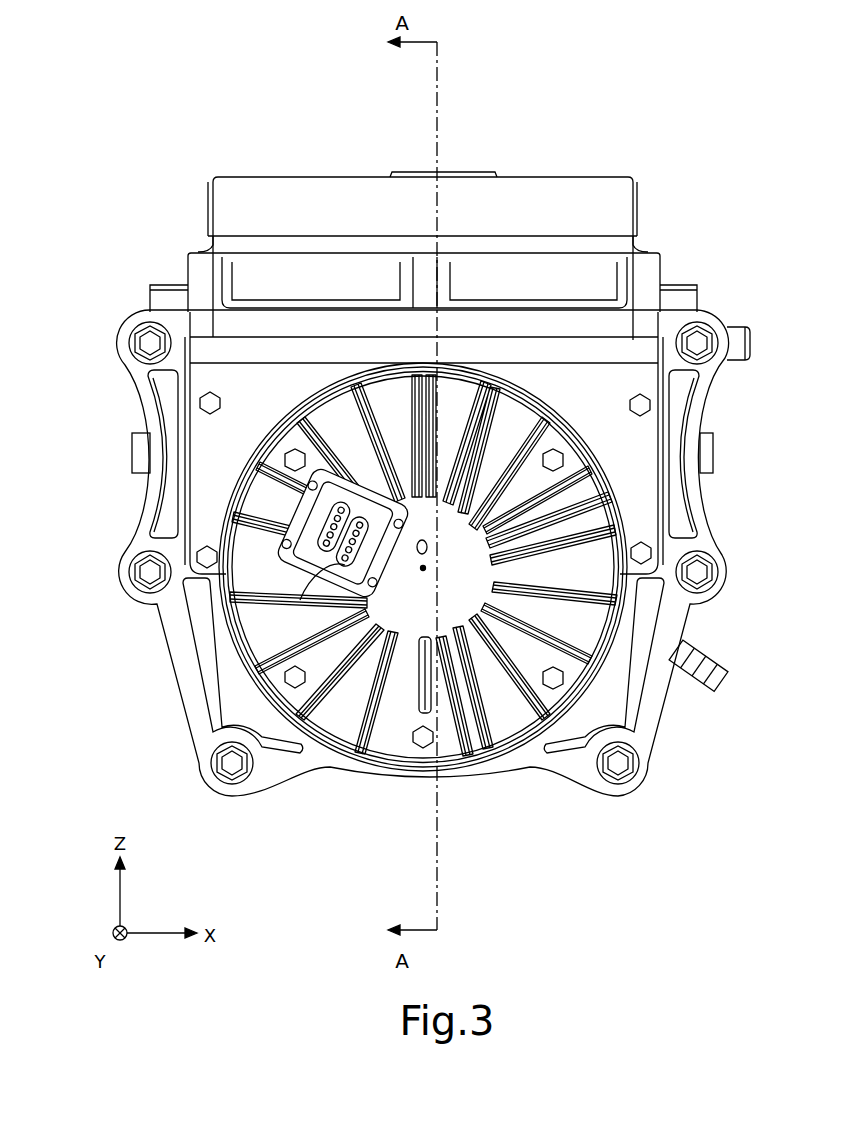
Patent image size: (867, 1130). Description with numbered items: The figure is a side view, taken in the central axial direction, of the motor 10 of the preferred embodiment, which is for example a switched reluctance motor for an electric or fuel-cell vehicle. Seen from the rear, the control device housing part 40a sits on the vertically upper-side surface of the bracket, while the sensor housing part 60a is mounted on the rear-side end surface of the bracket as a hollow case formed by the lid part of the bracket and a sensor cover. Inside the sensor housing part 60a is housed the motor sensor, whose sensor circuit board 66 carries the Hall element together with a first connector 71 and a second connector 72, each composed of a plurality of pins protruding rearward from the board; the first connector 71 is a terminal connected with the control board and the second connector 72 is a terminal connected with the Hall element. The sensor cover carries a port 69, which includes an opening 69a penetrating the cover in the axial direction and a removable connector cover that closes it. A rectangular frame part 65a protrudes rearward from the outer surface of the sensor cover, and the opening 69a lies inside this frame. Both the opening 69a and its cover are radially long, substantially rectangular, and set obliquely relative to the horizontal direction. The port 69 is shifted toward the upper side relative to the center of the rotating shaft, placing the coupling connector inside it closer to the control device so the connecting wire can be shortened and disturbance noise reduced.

The motor 10 is at (659, 146).
The control device housing part 40a is at (540, 178).
The sensor housing part 60a is at (625, 438).
The sensor circuit board 66 is at (183, 583).
The port 69 is at (303, 496).
The first connector 71 is at (285, 508).
The second connector 72 is at (355, 552).
The rectangular frame part 65a is at (292, 530).
The opening 69a is at (330, 580).